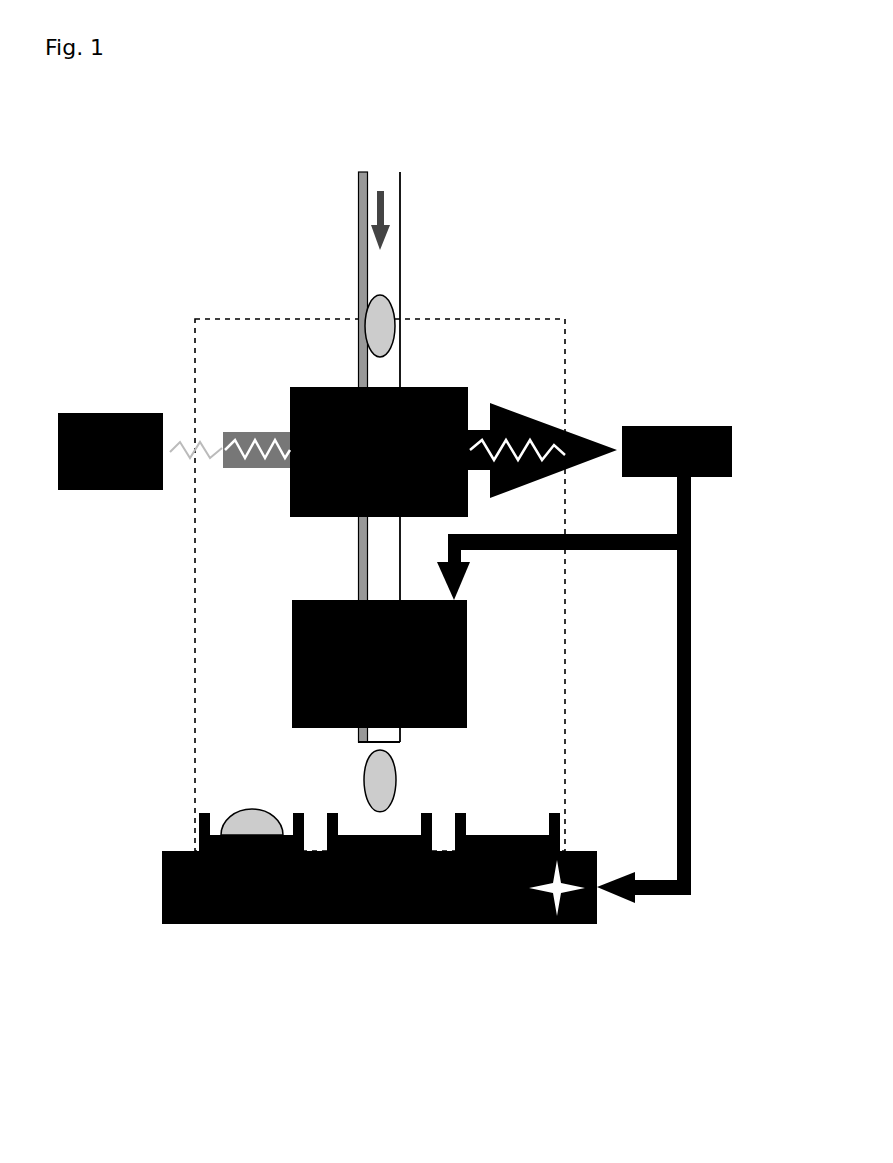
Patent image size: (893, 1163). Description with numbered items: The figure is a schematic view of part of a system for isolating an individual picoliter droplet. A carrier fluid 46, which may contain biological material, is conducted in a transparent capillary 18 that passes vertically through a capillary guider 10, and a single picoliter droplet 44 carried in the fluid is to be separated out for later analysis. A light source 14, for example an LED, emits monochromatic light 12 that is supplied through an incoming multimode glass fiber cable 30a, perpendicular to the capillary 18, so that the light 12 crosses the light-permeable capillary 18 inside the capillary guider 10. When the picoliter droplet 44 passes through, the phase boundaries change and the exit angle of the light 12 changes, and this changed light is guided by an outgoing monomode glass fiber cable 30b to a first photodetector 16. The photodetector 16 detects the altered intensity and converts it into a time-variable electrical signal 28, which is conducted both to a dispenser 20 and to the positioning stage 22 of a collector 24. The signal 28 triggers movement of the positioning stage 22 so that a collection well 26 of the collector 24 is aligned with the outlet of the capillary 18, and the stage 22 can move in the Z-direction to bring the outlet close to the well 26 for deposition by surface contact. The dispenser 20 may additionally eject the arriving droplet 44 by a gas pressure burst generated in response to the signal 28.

The capillary guider 10 is at (330, 380).
The monochromatic light 12 is at (226, 442).
The light source 14 is at (104, 497).
The first photodetector 16 is at (676, 412).
The capillary 18 is at (358, 207).
The dispenser 20 is at (287, 630).
The positioning stage 22 is at (153, 882).
The collector 24 is at (145, 843).
The collection well 26 is at (522, 822).
The electrical signal 28 is at (692, 648).
The multimode glass fiber cable 30a is at (260, 427).
The monomode glass fiber cable 30b is at (477, 425).
The picoliter droplet 44 is at (383, 335).
The carrier fluid 46 is at (383, 263).